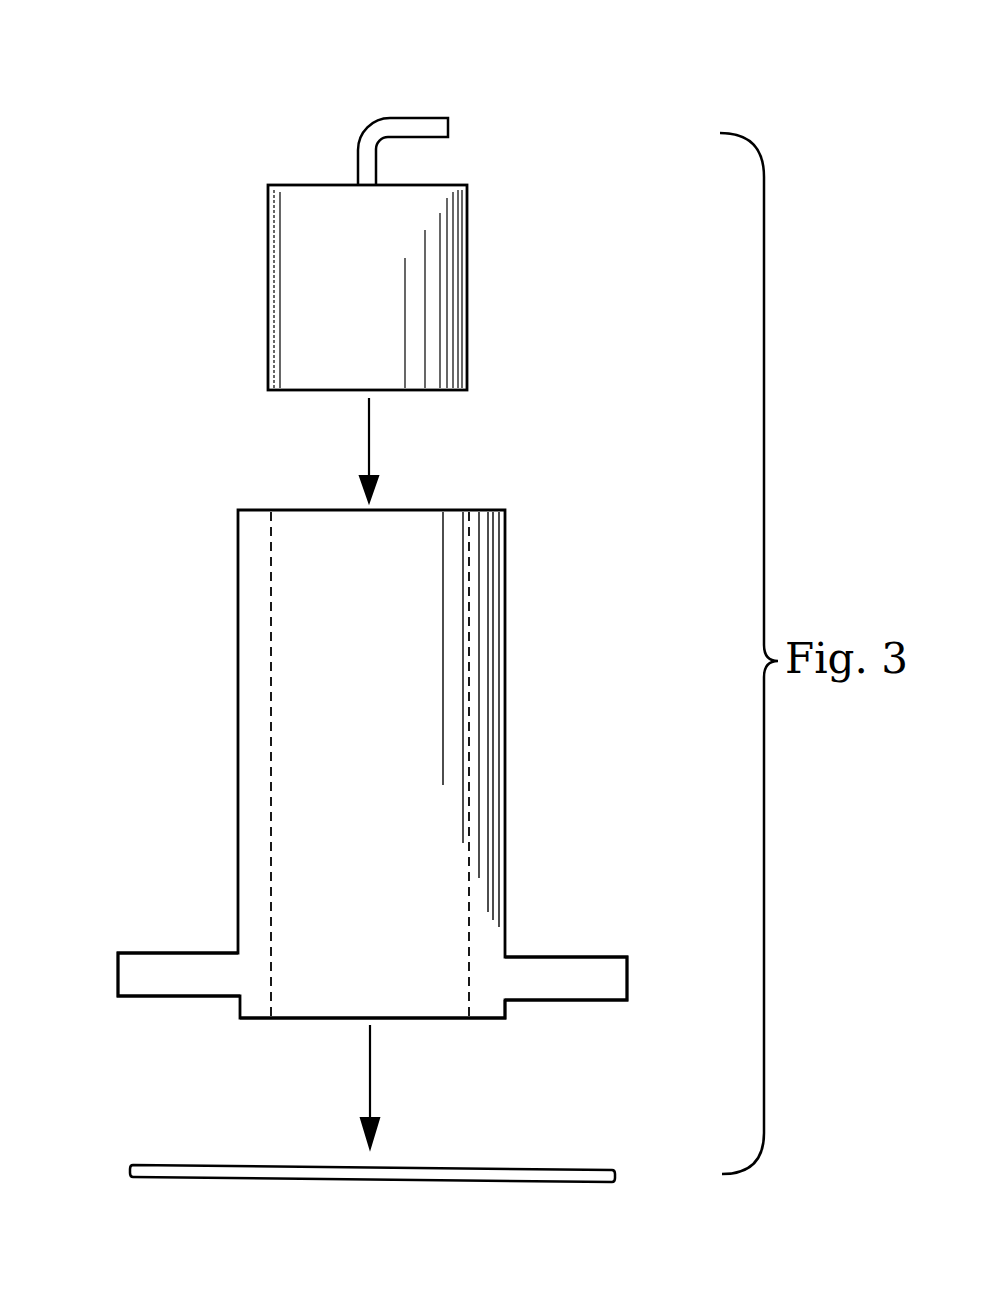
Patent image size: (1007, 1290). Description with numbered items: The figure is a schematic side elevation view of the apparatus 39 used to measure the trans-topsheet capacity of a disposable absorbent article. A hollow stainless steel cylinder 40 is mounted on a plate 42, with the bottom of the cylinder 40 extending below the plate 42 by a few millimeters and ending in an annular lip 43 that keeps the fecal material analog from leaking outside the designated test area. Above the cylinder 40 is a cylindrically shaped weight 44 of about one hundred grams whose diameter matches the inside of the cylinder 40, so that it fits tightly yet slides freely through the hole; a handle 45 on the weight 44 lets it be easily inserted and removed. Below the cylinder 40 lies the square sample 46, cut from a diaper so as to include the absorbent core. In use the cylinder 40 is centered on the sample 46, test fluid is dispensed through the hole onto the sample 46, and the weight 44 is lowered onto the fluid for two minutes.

The apparatus 39 is at (538, 628).
The hollow stainless steel cylinder 40 is at (312, 642).
The plate 42 is at (543, 973).
The lip 43 is at (490, 1012).
The weight 44 is at (303, 259).
The handle 45 is at (418, 127).
The sample 46 is at (218, 1168).